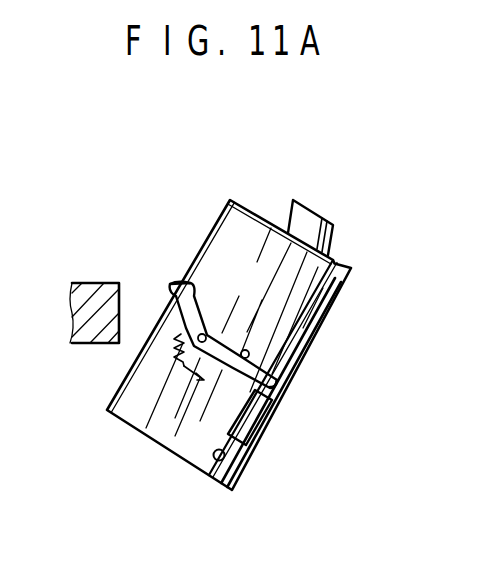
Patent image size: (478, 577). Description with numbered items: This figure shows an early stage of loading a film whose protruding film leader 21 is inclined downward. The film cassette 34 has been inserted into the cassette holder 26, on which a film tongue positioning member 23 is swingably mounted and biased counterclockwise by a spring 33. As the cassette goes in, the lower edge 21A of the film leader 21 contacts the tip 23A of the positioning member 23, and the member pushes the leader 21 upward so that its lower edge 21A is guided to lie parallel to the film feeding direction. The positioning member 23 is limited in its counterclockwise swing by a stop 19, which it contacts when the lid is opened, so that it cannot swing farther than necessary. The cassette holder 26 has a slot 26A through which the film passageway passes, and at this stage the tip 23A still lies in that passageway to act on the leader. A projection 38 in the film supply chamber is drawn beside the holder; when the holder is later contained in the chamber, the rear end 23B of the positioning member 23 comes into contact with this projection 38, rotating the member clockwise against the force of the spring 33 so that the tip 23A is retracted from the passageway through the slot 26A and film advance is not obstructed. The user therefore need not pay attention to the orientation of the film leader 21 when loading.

The stop 19 is at (245, 350).
The film leader 21 is at (320, 313).
The lower edge of the film leader 21A is at (280, 380).
The film tongue positioning member 23 is at (233, 380).
The tip of the positioning member 23A is at (287, 398).
The rear end of the positioning member 23B is at (173, 290).
The cassette holder 26 is at (220, 221).
The slot 26A is at (270, 432).
The spring 33 is at (178, 360).
The film cassette 34 is at (343, 263).
The projection 38 is at (92, 283).